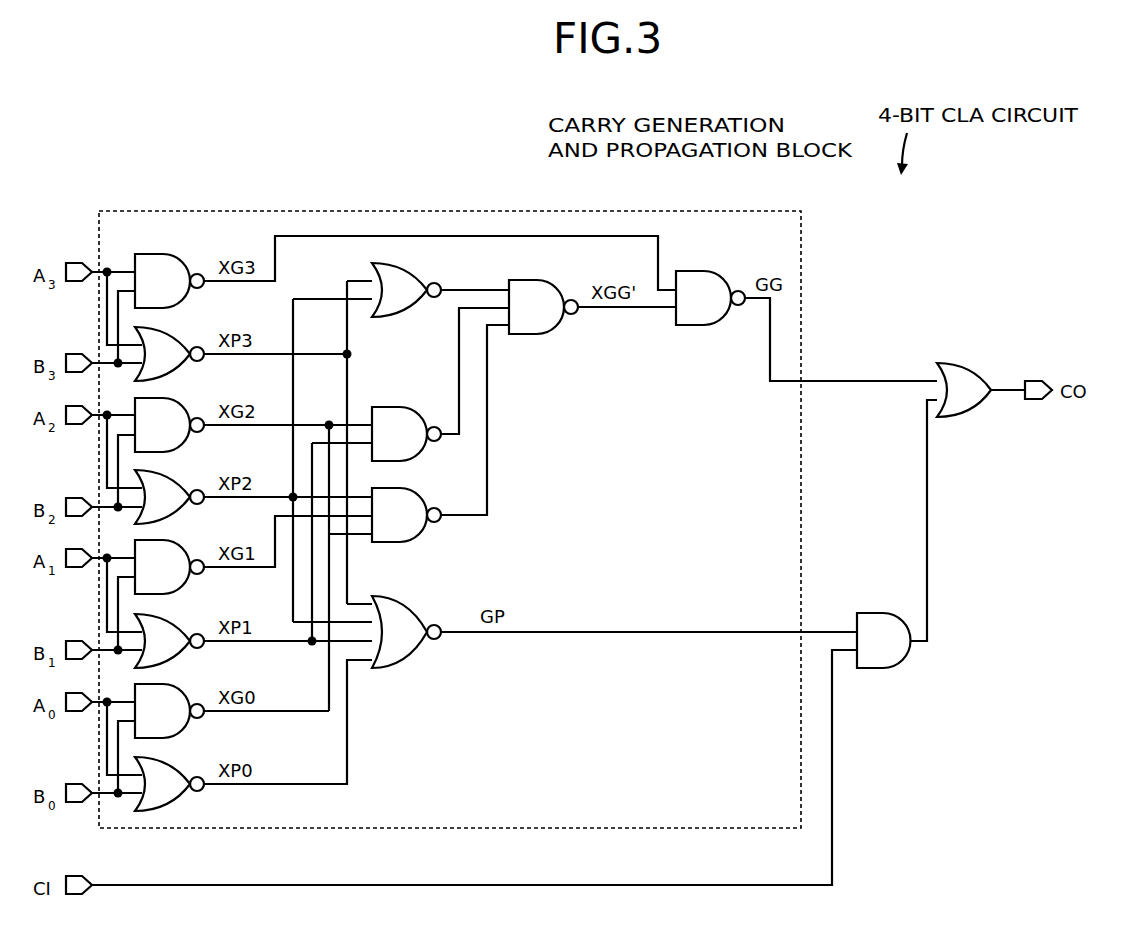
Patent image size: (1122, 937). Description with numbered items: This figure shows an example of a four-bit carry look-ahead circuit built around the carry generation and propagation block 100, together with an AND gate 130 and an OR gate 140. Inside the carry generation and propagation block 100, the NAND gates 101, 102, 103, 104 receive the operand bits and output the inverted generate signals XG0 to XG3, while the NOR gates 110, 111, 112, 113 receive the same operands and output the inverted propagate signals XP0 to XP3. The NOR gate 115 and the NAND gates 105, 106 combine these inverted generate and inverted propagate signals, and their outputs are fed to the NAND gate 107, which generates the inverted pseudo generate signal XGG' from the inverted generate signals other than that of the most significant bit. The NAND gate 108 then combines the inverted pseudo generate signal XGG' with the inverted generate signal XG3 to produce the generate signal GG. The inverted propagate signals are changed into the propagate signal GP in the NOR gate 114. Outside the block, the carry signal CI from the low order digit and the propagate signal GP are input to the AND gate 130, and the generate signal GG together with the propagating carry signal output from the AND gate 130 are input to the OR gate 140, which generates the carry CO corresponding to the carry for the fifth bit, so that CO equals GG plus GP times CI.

The carry generation and propagation block 100 is at (656, 210).
The NAND gate 101 is at (182, 686).
The NAND gate 102 is at (182, 542).
The NAND gate 103 is at (182, 400).
The NAND gate 104 is at (182, 256).
The NAND gate 105 is at (420, 489).
The NAND gate 106 is at (390, 406).
The NAND gate 107 is at (555, 279).
The NAND gate 108 is at (723, 274).
The NOR gate 110 is at (182, 759).
The NOR gate 111 is at (182, 616).
The NOR gate 112 is at (182, 473).
The NOR gate 113 is at (182, 330).
The NOR gate 114 is at (413, 606).
The NOR gate 115 is at (410, 268).
The AND gate 130 is at (873, 612).
The OR gate 140 is at (970, 372).